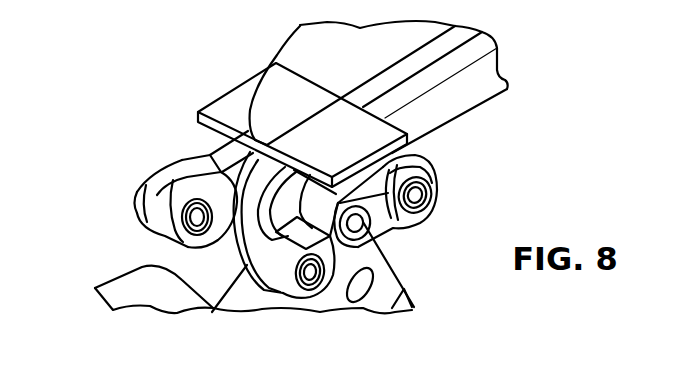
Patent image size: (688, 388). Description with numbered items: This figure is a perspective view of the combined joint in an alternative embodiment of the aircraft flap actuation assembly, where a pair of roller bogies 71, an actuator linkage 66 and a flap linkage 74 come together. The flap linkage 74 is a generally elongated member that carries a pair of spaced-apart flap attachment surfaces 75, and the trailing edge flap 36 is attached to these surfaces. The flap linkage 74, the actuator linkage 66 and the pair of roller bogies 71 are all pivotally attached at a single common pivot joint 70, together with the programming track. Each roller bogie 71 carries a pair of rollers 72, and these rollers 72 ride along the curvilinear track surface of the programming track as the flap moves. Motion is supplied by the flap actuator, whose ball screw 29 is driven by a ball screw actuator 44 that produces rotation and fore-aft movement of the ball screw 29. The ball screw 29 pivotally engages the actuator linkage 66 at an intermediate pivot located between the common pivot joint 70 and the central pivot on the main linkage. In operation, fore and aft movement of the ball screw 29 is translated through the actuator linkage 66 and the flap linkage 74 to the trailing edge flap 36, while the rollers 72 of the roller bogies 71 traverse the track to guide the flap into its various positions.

The ball screw 29 is at (242, 303).
The trailing edge flap 36 is at (304, 46).
The ball screw actuator 44 is at (117, 293).
The actuator linkage 66 is at (392, 284).
The common pivot joint 70 is at (376, 239).
The roller bogies 71 is at (183, 159).
The rollers 72 is at (162, 190).
The flap linkage 74 is at (478, 93).
The flap attachment surfaces 75 is at (312, 103).